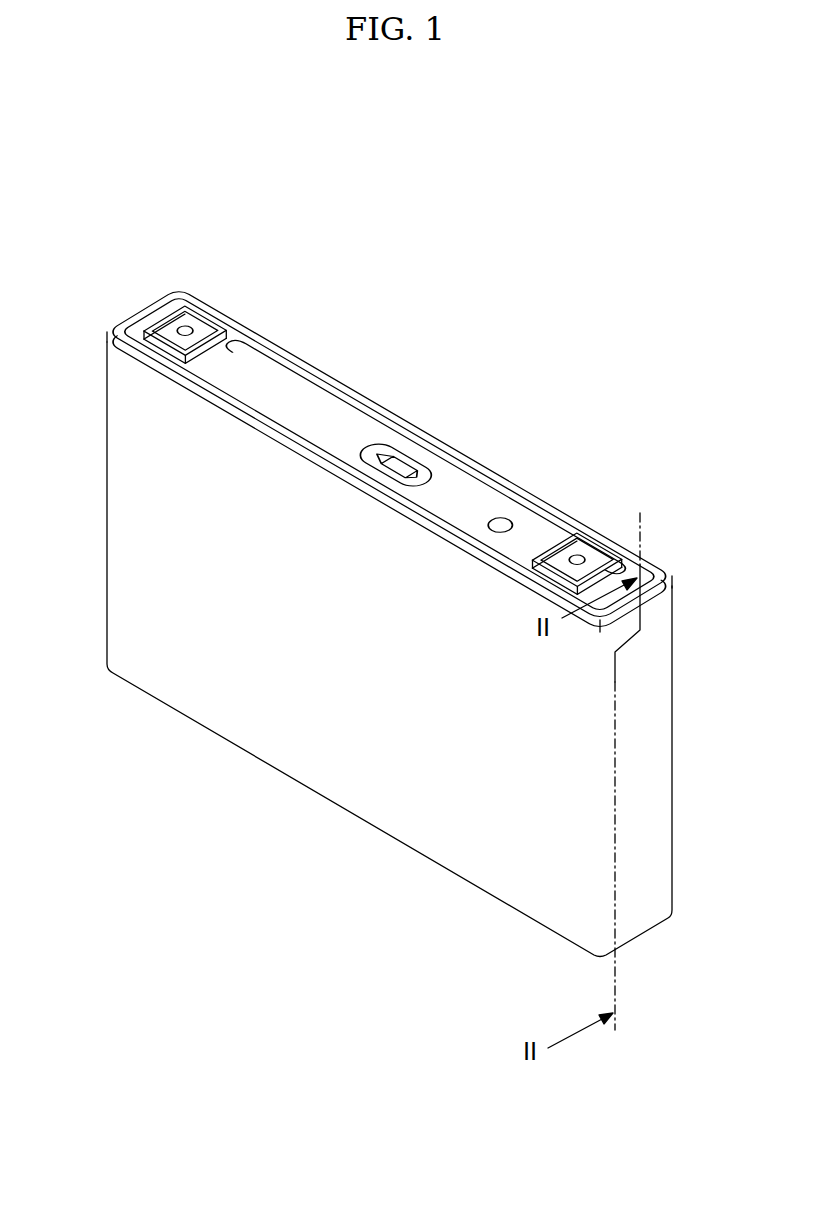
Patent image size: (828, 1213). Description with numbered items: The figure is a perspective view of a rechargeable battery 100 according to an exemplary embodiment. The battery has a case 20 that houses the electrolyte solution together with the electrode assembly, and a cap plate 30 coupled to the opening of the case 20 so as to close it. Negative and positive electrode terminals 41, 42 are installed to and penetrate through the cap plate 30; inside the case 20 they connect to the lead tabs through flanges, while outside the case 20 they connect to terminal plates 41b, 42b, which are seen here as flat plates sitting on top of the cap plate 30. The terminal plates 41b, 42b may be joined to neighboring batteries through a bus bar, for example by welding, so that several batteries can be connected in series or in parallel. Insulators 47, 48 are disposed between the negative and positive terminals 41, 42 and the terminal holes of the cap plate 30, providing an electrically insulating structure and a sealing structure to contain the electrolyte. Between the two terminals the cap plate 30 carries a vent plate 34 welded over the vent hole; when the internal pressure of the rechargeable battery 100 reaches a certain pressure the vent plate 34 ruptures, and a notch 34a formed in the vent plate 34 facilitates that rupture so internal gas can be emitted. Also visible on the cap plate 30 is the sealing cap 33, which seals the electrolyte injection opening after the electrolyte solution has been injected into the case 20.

The rechargeable battery 100 is at (523, 438).
The case 20 is at (298, 765).
The cap plate 30 is at (330, 402).
The sealing cap 33 is at (503, 521).
The vent plate 34 is at (397, 450).
The notch 34a is at (408, 462).
The negative electrode terminal 41 is at (187, 330).
The terminal plate 41b is at (165, 330).
The positive electrode terminal 42 is at (587, 560).
The terminal plate 42b is at (602, 560).
The insulator 47 is at (262, 338).
The insulator 48 is at (633, 584).